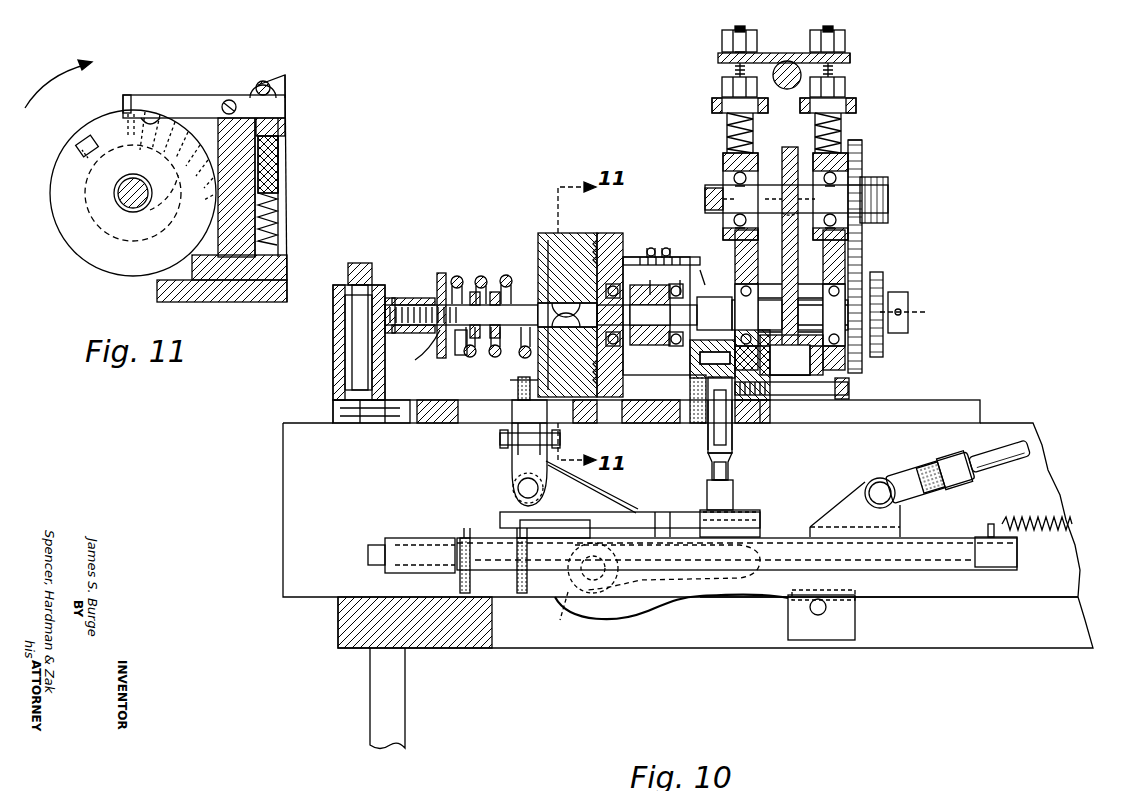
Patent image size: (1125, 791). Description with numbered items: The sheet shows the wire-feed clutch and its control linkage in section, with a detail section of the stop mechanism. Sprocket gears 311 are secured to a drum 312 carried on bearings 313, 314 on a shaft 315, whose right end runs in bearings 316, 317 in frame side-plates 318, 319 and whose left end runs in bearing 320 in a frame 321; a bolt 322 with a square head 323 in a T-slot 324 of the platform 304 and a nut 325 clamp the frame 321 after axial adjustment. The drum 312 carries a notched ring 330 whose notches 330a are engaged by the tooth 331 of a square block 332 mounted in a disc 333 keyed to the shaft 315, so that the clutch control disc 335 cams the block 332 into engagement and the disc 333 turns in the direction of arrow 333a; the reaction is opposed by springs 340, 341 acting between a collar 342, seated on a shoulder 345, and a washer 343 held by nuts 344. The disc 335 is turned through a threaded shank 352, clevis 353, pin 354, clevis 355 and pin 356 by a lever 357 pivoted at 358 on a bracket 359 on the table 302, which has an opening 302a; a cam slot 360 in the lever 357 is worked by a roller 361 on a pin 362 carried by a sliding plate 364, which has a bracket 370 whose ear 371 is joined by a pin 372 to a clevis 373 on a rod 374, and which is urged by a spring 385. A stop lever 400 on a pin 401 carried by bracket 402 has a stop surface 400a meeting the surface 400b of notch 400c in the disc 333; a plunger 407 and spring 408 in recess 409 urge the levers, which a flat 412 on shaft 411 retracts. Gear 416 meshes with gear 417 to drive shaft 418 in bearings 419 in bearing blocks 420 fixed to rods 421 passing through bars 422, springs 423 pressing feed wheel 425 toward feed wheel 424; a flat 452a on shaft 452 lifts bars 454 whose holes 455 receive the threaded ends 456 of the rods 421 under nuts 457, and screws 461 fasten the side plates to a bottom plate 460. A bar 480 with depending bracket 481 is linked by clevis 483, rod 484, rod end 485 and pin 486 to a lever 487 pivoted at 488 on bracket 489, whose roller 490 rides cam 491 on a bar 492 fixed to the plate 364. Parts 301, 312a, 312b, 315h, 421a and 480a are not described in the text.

In FIG. 10, the leg 301 is at (370, 712).
In FIG. 10, the table 302 is at (338, 626).
In FIG. 10, the opening 302a is at (975, 628).
In FIG. 11, the platform 304 is at (262, 300).
In FIG. 10, the platform 304 is at (980, 402).
In FIG. 10, the sprocket gears 311 is at (668, 246).
In FIG. 10, the drum 312 is at (650, 315).
In FIG. 10, the gear bracket 312a is at (712, 359).
In FIG. 10, the gear bracket 312b is at (779, 365).
In FIG. 10, the bearing 313 is at (617, 298).
In FIG. 10, the bearing 314 is at (685, 315).
In FIG. 11, the shaft 315 is at (118, 190).
In FIG. 10, the shaft 315 is at (912, 312).
In FIG. 10, the shaft hub 315h is at (715, 313).
In FIG. 10, the bearing 316 is at (757, 315).
In FIG. 10, the bearing 317 is at (823, 316).
In FIG. 10, the frame side-plate 318 is at (752, 268).
In FIG. 10, the frame side-plate 319 is at (835, 272).
In FIG. 10, the bearing 320 is at (392, 297).
In FIG. 10, the frame 321 is at (333, 312).
In FIG. 10, the bolt 322 is at (333, 330).
In FIG. 10, the square head 323 is at (333, 410).
In FIG. 10, the T-slot 324 is at (375, 425).
In FIG. 10, the nut 325 is at (362, 264).
In FIG. 10, the ring 330 is at (610, 240).
In FIG. 11, the notches 330a is at (155, 201).
In FIG. 11, the tooth 331 is at (78, 141).
In FIG. 11, the square block 332 is at (85, 152).
In FIG. 11, the disc 333 is at (62, 231).
In FIG. 10, the disc 333 is at (568, 250).
In FIG. 11, the arrow 333a is at (33, 68).
In FIG. 10, the clutch control disc 335 is at (538, 236).
In FIG. 10, the spring 340 is at (463, 356).
In FIG. 10, the spring 341 is at (485, 275).
In FIG. 10, the collar 342 is at (520, 278).
In FIG. 10, the washer 343 is at (442, 272).
In FIG. 10, the nuts 344 is at (412, 334).
In FIG. 10, the shoulder 345 is at (535, 316).
In FIG. 10, the threaded shank 352 is at (518, 388).
In FIG. 10, the clevis 353 is at (512, 410).
In FIG. 10, the pin 354 is at (500, 440).
In FIG. 10, the clevis 355 is at (512, 468).
In FIG. 10, the pin 356 is at (518, 488).
In FIG. 10, the lever 357 is at (628, 491).
In FIG. 10, the pivot 358 is at (827, 608).
In FIG. 10, the bracket 359 is at (856, 630).
In FIG. 10, the cam slot 360 is at (648, 588).
In FIG. 10, the roller 361 is at (590, 593).
In FIG. 10, the pin 362 is at (550, 617).
In FIG. 10, the sliding plate 364 is at (368, 554).
In FIG. 10, the bracket 370 is at (900, 526).
In FIG. 10, the apertured ear 371 is at (840, 505).
In FIG. 10, the pin 372 is at (876, 478).
In FIG. 10, the clevis 373 is at (914, 462).
In FIG. 10, the rod 374 is at (990, 450).
In FIG. 10, the spring 385 is at (1060, 532).
In FIG. 11, the stop lever 400 is at (203, 98).
In FIG. 11, the stop surface 400a is at (122, 100).
In FIG. 11, the stop surface 400b is at (120, 114).
In FIG. 11, the notch 400c is at (159, 106).
In FIG. 11, the pin 401 is at (232, 98).
In FIG. 11, the bracket 402 is at (288, 252).
In FIG. 11, the plunger 407 is at (285, 122).
In FIG. 11, the spring 408 is at (283, 148).
In FIG. 11, the recess 409 is at (284, 202).
In FIG. 11, the shaft 411 is at (278, 80).
In FIG. 11, the flat 412 is at (272, 86).
In FIG. 10, the gear 416 is at (862, 365).
In FIG. 10, the gear 417 is at (862, 146).
In FIG. 10, the shaft 418 is at (888, 196).
In FIG. 10, the bearings 419 is at (722, 176).
In FIG. 10, the bearing blocks 420 is at (884, 276).
In FIG. 10, the rod 421 is at (725, 120).
In FIG. 10, the nut 421a is at (722, 84).
In FIG. 10, the bar 422 is at (712, 100).
In FIG. 10, the springs 423 is at (726, 137).
In FIG. 10, the feed wheel 424 is at (790, 310).
In FIG. 10, the wire feed wheel 425 is at (796, 255).
In FIG. 10, the shaft 452 is at (786, 79).
In FIG. 10, the flat 452a is at (800, 62).
In FIG. 10, the bars 454 is at (870, 52).
In FIG. 10, the plain holes 455 is at (718, 56).
In FIG. 10, the upper threaded ends 456 is at (740, 35).
In FIG. 10, the nuts 457 is at (735, 30).
In FIG. 10, the bottom plate 460 is at (805, 404).
In FIG. 10, the screws 461 is at (850, 388).
In FIG. 10, the bar 480 is at (690, 395).
In FIG. 10, the rack end 480a is at (700, 428).
In FIG. 10, the depending bracket 481 is at (710, 446).
In FIG. 10, the clevis 483 is at (732, 437).
In FIG. 10, the rod 484 is at (730, 470).
In FIG. 10, the rod end 485 is at (734, 490).
In FIG. 10, the pin 486 is at (708, 480).
In FIG. 10, the lever 487 is at (760, 522).
In FIG. 10, the pivot 488 is at (520, 525).
In FIG. 10, the bracket 489 is at (460, 532).
In FIG. 10, the roller 490 is at (742, 514).
In FIG. 10, the cam 491 is at (660, 512).
In FIG. 10, the bar 492 is at (604, 515).